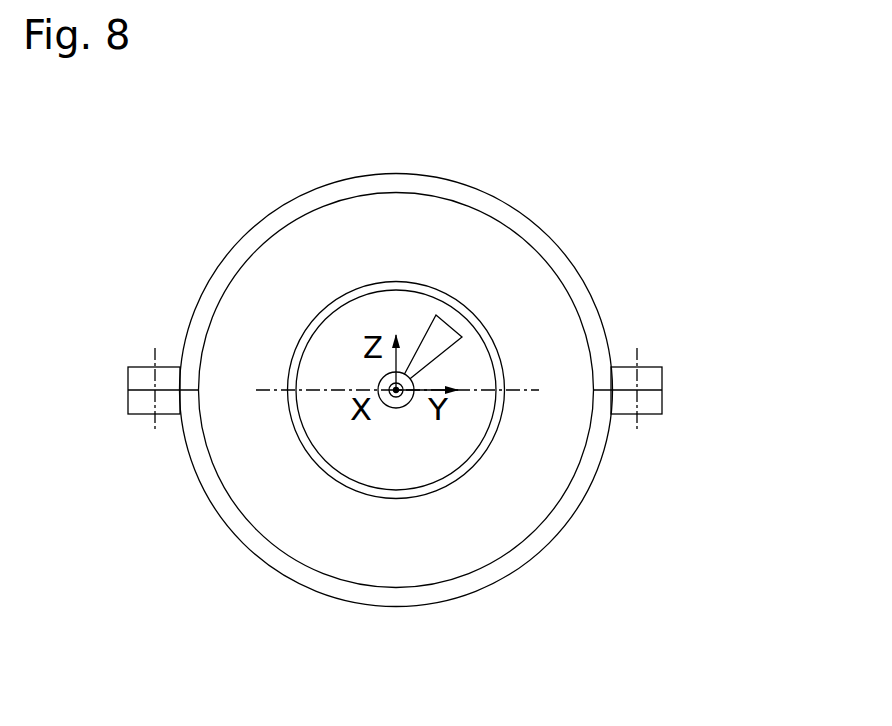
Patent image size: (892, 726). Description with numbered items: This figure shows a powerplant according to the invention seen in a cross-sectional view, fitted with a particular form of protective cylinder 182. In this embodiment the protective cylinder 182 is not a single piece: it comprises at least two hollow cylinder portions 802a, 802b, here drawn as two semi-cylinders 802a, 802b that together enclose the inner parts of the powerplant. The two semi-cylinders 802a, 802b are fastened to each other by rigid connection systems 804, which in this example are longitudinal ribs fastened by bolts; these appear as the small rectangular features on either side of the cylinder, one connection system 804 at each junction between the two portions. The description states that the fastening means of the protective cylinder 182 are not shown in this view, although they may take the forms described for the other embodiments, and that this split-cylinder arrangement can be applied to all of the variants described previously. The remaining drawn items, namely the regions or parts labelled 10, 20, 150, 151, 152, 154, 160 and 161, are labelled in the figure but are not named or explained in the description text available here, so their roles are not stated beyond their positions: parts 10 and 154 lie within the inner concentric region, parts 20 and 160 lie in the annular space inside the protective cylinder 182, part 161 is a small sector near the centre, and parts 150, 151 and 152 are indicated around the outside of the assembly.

The first object / reference coordinate origin 10 is at (380, 463).
The second object 20 is at (375, 568).
The rotary unit 150 is at (710, 577).
The first portion of rotary unit 151 is at (132, 270).
The second portion of rotary unit 152 is at (770, 517).
The inner cylindrical member 154 is at (452, 478).
The annular body 160 is at (280, 478).
The sector-shaped marker 161 is at (436, 337).
The protective cylinder 182 is at (705, 278).
The hollow cylinder portion 802a is at (537, 548).
The hollow cylinder portion 802b is at (523, 225).
The rigid connection system 804 is at (657, 393).